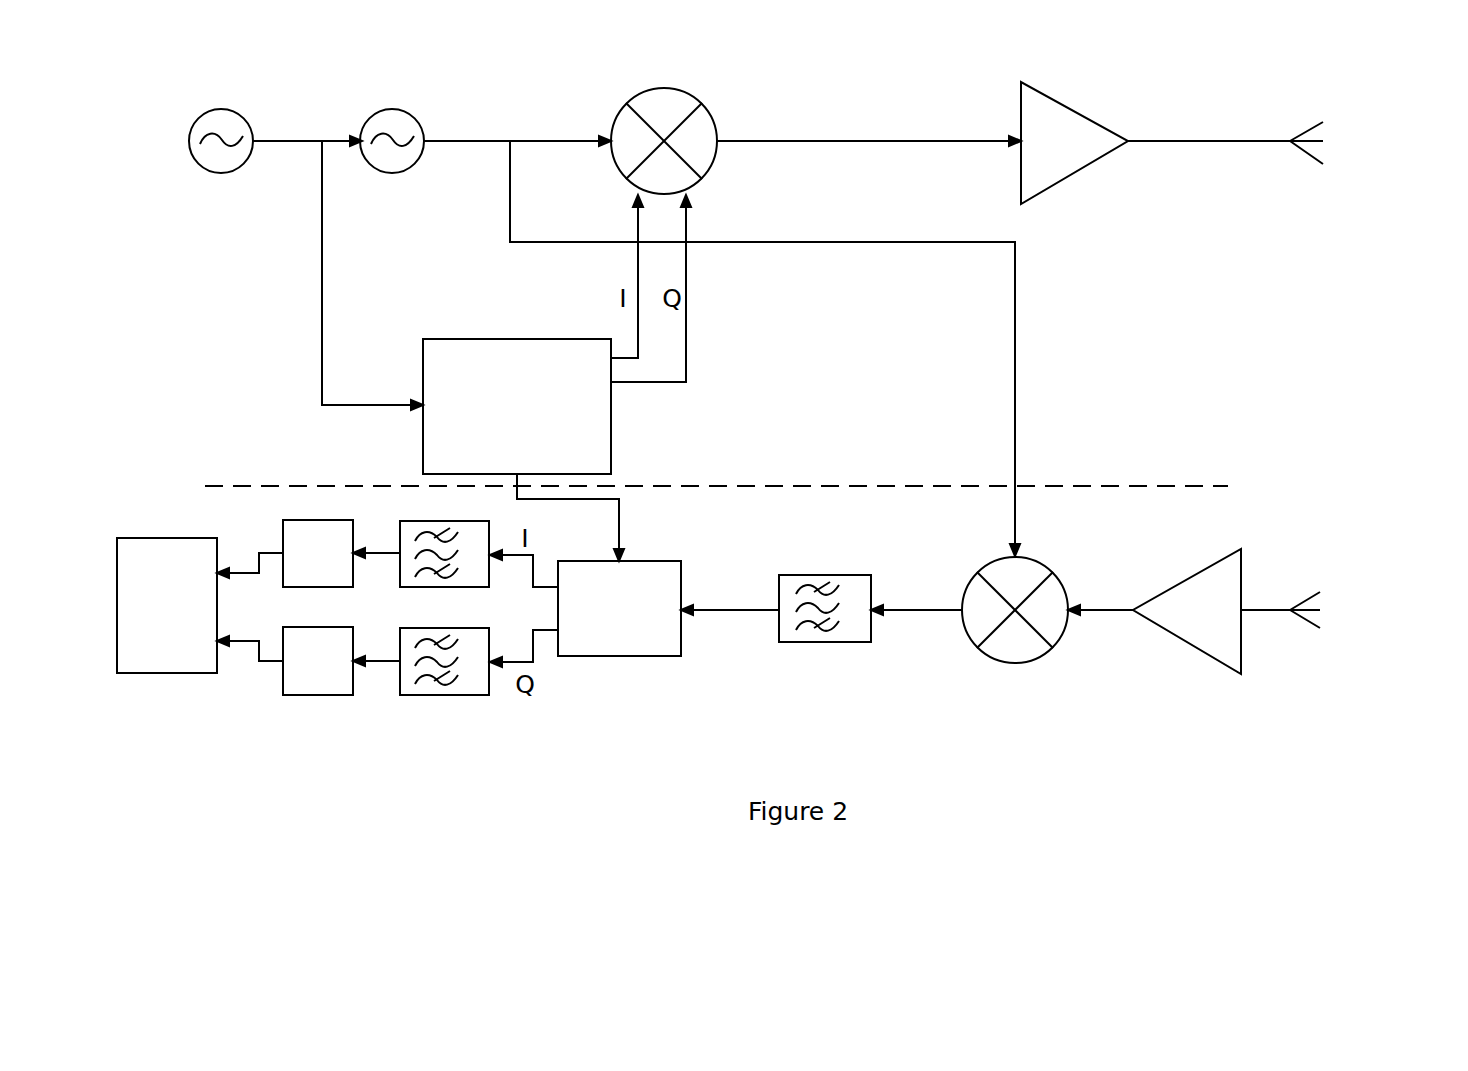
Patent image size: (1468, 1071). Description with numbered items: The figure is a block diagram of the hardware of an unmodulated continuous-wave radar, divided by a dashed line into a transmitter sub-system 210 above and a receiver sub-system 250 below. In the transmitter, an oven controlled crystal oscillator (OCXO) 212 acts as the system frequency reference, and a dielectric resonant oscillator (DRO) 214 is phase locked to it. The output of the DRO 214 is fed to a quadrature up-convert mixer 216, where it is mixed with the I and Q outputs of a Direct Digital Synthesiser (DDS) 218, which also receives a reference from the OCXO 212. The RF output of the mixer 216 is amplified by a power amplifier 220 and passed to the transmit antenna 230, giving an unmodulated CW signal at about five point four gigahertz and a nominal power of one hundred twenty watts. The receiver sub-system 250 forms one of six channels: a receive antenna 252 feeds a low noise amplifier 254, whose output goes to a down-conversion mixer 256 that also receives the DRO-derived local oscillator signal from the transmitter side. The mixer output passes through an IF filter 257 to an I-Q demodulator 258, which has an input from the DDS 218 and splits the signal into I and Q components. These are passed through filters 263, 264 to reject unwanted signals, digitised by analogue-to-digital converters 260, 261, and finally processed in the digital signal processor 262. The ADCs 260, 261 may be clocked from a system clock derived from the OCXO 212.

The transmitter sub-system 210 is at (716, 395).
The oven controlled crystal oscillator (OCXO) 212 is at (199, 167).
The dielectric resonant oscillator (DRO) 214 is at (397, 173).
The quadrature up-convert mixer 216 is at (688, 100).
The Direct Digital Synthesiser (DDS) 218 is at (482, 338).
The power amplifier 220 is at (1070, 108).
The transmit antenna 230 is at (1302, 128).
The receiver sub-system 250 is at (1389, 549).
The antenna 252 is at (1306, 636).
The low noise amplifier 254 is at (1188, 582).
The down-conversion mixer 256 is at (1026, 662).
The IF filter 257 is at (820, 642).
The I-Q demodulator 258 is at (612, 657).
The digitiser (ADC) 260 is at (284, 532).
The digitiser (ADC) 261 is at (310, 688).
The signal processor (DSP) 262 is at (163, 675).
The filter 263 is at (422, 529).
The filter 264 is at (450, 688).